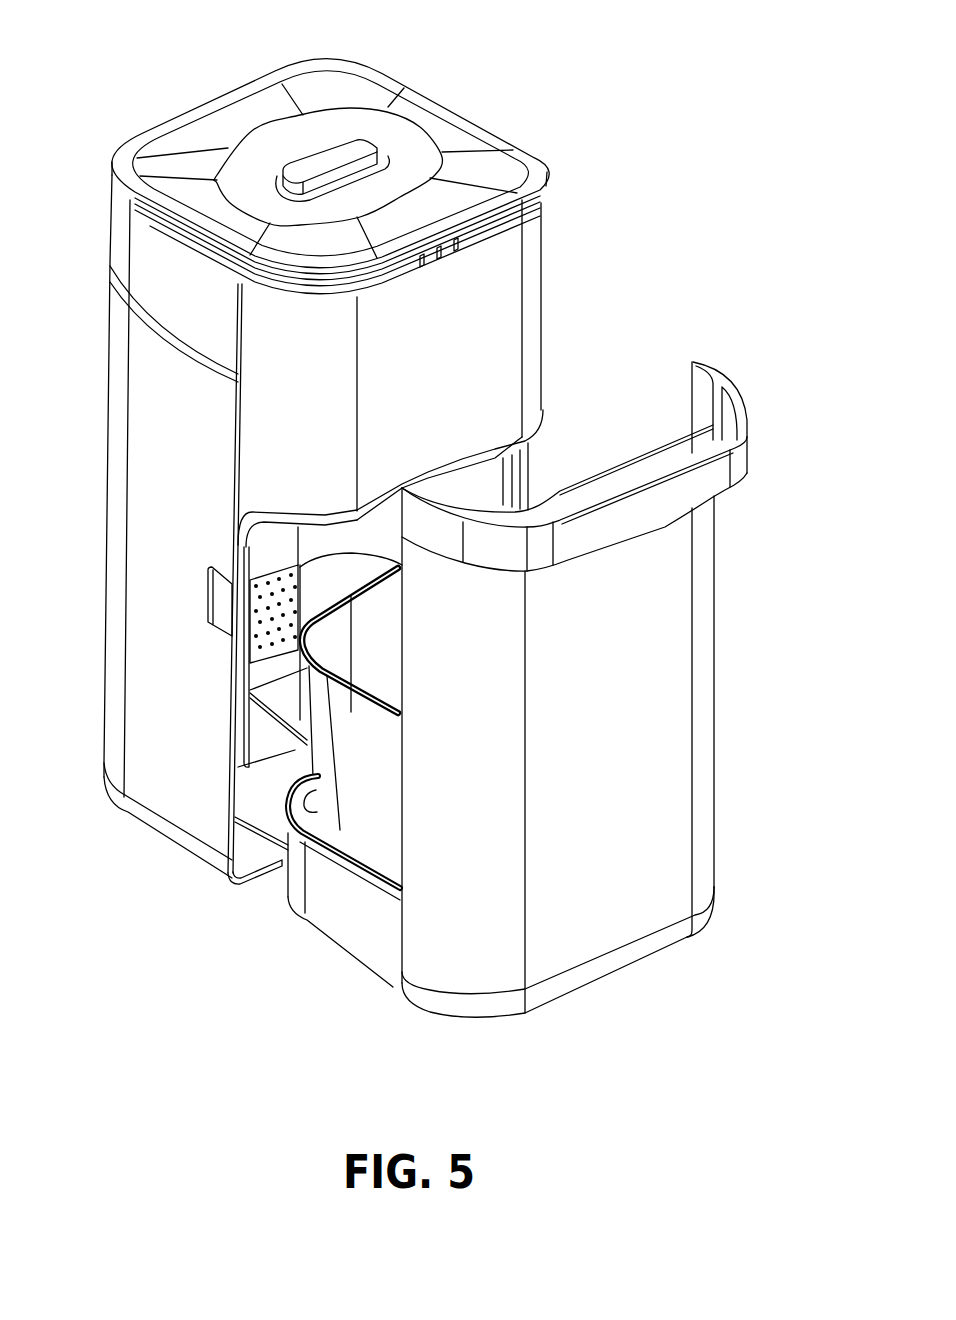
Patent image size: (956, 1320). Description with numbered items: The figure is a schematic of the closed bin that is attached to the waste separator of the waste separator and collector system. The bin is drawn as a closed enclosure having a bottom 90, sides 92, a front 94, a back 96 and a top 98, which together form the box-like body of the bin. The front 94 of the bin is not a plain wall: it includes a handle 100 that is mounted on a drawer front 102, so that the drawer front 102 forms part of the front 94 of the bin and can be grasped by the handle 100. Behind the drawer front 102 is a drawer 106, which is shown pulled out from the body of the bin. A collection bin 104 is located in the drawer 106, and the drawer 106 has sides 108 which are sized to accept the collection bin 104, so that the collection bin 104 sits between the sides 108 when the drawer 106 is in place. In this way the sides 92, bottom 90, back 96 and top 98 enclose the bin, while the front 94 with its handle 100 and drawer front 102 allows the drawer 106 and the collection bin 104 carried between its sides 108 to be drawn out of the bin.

The bottom 90 is at (178, 798).
The sides 92 is at (512, 245).
The front 94 is at (481, 325).
The back 96 is at (216, 103).
The top 98 is at (363, 90).
The handle 100 is at (722, 468).
The drawer front 102 is at (673, 745).
The collection bin 104 is at (350, 760).
The drawer 106 is at (320, 907).
The sides 108 is at (377, 937).